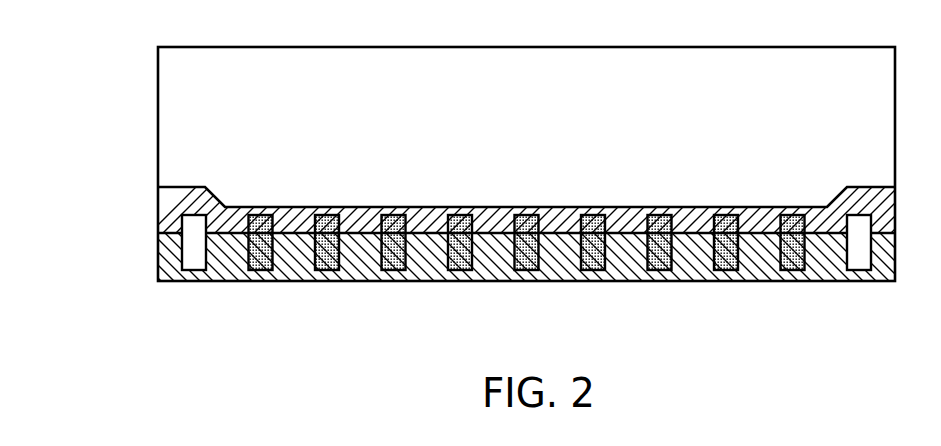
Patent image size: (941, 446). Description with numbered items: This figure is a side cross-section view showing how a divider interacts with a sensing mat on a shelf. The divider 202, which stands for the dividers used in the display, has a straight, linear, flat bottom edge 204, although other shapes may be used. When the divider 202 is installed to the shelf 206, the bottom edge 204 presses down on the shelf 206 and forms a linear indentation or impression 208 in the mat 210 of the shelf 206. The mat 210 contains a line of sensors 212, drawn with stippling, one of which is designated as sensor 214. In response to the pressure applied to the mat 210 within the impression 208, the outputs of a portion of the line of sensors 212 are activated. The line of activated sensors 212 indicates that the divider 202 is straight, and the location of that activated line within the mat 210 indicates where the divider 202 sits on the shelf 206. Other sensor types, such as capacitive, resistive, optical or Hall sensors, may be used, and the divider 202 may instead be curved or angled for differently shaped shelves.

The divider 202 is at (530, 67).
The bottom edge 204 is at (748, 227).
The shelf 206 is at (690, 267).
The impression 208 is at (262, 186).
The mat 210 is at (285, 232).
The line of sensors 212 is at (138, 246).
The sensor 214 is at (455, 258).